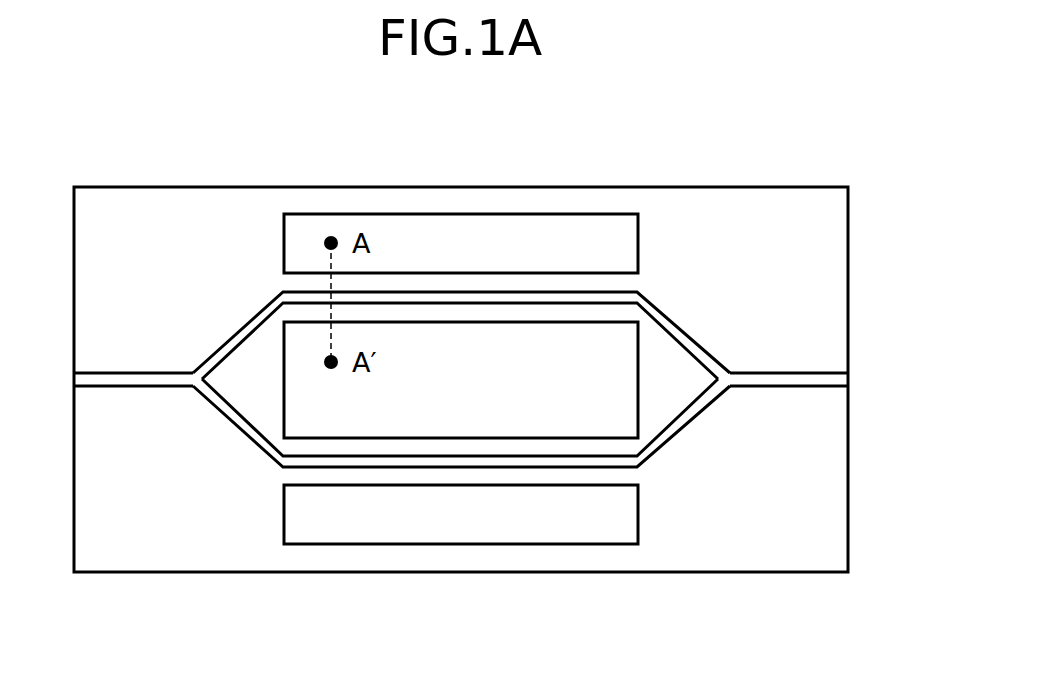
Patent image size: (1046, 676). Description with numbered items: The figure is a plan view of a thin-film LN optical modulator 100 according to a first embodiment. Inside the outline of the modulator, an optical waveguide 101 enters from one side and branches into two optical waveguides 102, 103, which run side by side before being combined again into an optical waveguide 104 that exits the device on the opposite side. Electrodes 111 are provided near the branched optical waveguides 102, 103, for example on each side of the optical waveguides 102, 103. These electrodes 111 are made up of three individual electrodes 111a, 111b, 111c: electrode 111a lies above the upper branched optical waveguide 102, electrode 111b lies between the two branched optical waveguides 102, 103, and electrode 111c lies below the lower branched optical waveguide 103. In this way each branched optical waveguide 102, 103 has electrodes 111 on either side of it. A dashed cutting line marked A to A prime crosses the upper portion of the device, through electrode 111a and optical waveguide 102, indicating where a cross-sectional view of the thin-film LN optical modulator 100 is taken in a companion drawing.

The thin-film LN optical modulator 100 is at (685, 160).
The optical waveguide 101 is at (123, 373).
The optical waveguide 102 is at (405, 290).
The optical waveguide 103 is at (378, 468).
The optical waveguide 104 is at (769, 373).
The electrodes 111 is at (519, 364).
The electrode 111a is at (542, 234).
The electrode 111b is at (610, 367).
The electrode 111c is at (563, 522).